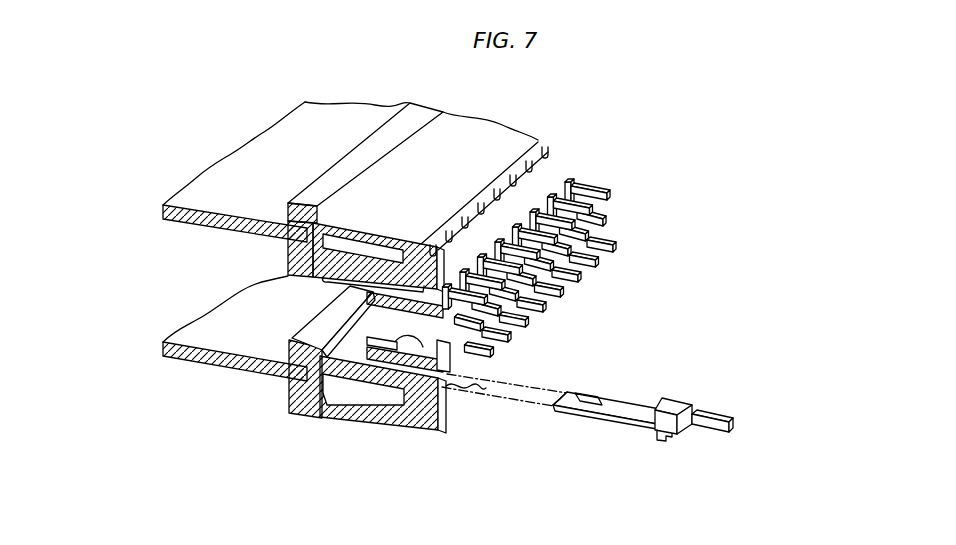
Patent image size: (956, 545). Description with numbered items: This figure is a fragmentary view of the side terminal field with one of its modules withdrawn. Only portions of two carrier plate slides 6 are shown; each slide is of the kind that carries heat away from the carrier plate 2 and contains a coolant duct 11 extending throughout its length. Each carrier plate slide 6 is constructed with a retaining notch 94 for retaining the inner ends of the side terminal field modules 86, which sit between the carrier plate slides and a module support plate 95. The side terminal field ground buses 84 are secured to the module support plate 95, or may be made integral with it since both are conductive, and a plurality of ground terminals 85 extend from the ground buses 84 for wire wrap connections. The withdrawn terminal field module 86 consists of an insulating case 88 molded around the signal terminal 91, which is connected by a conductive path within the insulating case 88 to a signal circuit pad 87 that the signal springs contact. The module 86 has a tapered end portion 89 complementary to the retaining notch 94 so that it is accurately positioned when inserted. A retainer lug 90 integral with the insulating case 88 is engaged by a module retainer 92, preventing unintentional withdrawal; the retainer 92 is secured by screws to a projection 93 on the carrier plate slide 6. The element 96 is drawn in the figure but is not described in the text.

The carrier plate 2 is at (208, 229).
The carrier plate slide 6 is at (417, 127).
The coolant duct 11 is at (342, 251).
The side terminal field ground bus 84 is at (425, 316).
The ground terminal 85 is at (612, 247).
The side terminal field module 86 is at (373, 284).
The signal circuit pad 87 is at (594, 401).
The insulating case 88 is at (679, 405).
The tapered end portion 89 is at (558, 413).
The retainer lug 90 is at (659, 442).
The signal terminal 91 is at (714, 417).
The module retainer 92 is at (452, 418).
The projection 93 is at (427, 404).
The retaining notch 94 is at (363, 178).
The module support plate 95 is at (362, 305).
The contact plate 96 is at (381, 349).